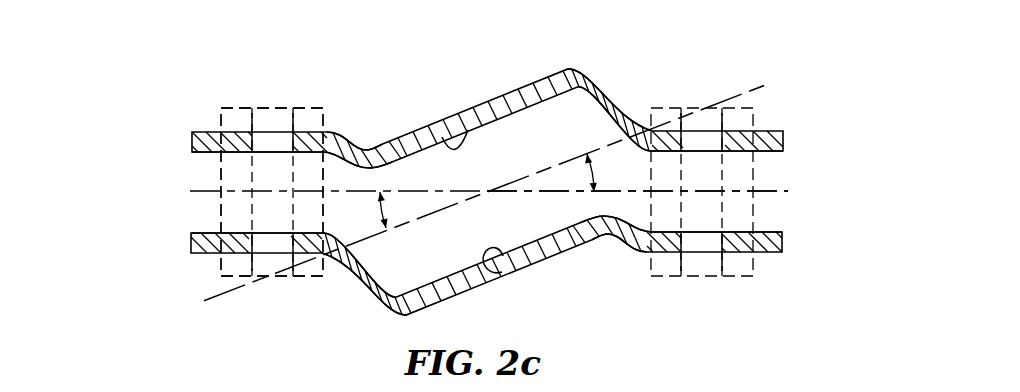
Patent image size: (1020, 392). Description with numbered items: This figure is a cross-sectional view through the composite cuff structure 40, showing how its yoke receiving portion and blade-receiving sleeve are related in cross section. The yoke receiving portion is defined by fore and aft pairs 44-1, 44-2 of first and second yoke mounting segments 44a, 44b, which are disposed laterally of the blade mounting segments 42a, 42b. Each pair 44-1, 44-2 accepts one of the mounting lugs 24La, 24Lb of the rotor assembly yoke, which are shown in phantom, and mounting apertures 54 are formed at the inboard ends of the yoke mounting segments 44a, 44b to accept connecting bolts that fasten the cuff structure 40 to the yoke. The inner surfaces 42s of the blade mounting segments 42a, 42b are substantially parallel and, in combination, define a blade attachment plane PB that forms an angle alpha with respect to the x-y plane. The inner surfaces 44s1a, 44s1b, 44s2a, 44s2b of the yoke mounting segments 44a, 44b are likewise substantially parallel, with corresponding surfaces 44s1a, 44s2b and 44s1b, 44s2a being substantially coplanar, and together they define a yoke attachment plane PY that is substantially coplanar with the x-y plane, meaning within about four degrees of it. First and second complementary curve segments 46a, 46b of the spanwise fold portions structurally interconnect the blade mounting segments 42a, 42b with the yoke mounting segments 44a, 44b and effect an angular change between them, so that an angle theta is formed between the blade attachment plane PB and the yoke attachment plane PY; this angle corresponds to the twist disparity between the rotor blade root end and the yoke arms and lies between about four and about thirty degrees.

The composite cuff structure 40 is at (294, 92).
The mounting apertures 54 is at (253, 133).
The fore pair of yoke mounting segments 44-1 is at (860, 84).
The aft pair of yoke mounting segments 44-2 is at (123, 83).
The first yoke mounting segment 44a is at (206, 124).
The second yoke mounting segment 44b is at (847, 63).
The inner surface of first yoke mounting segment 44s1a is at (772, 232).
The inner surface of second yoke mounting segment 44s1b is at (773, 150).
The inner surface of first yoke mounting segment 44s2a is at (199, 153).
The inner surface of second yoke mounting segment 44s2b is at (207, 234).
The blade mounting segment 42a is at (511, 86).
The blade mounting segment 42b is at (538, 268).
The inner surfaces of the blade-mounting segments 42s is at (442, 140).
The first complementary curve segment 46a is at (371, 145).
The second complementary curve segment 46b is at (642, 122).
The mounting lug 24La is at (757, 210).
The mounting lug 24Lb is at (220, 213).
The blade attachment plane PB is at (753, 87).
The yoke attachment plane PY is at (781, 190).
The x-y plane x-y is at (402, 192).